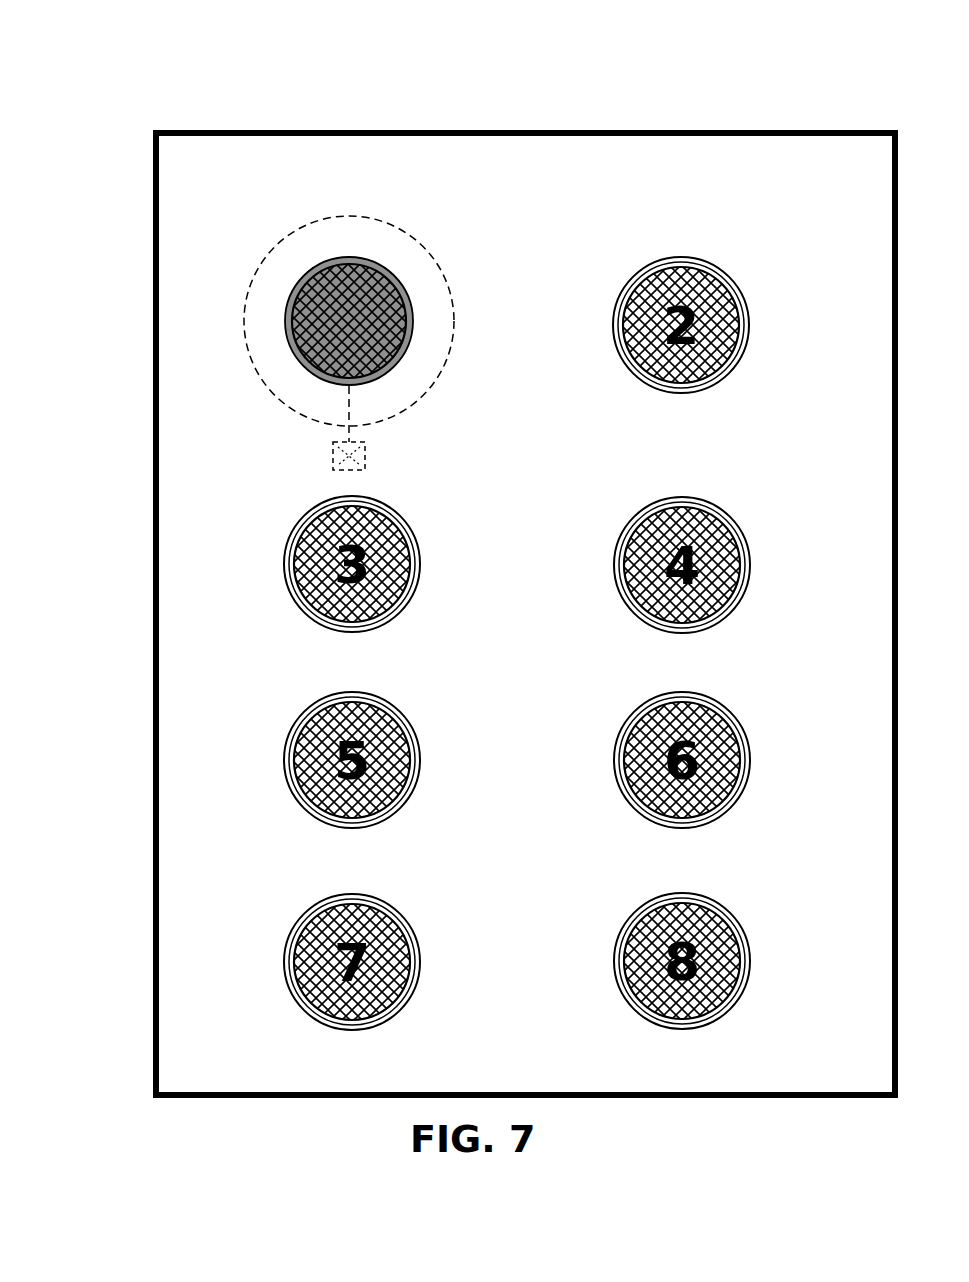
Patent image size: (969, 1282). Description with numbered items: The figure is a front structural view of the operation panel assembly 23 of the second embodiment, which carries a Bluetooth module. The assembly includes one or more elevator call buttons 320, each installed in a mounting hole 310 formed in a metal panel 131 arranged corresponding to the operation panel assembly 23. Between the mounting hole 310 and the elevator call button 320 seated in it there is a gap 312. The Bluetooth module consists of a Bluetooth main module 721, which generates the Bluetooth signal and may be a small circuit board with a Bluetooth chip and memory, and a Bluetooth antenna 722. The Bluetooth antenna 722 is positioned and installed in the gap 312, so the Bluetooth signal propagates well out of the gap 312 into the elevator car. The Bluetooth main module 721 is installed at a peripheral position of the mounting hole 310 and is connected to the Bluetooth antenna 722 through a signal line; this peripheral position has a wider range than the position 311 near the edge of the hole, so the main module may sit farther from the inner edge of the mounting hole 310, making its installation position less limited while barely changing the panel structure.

The operation panel assembly 23 is at (486, 554).
The metal panel 131 is at (153, 183).
The mounting hole 310 is at (367, 256).
The position near the edge 311 is at (428, 287).
The elevator call button 320 is at (343, 324).
The gap 312 is at (349, 338).
The Bluetooth antenna 722 is at (293, 360).
The Bluetooth main module 721 is at (333, 462).